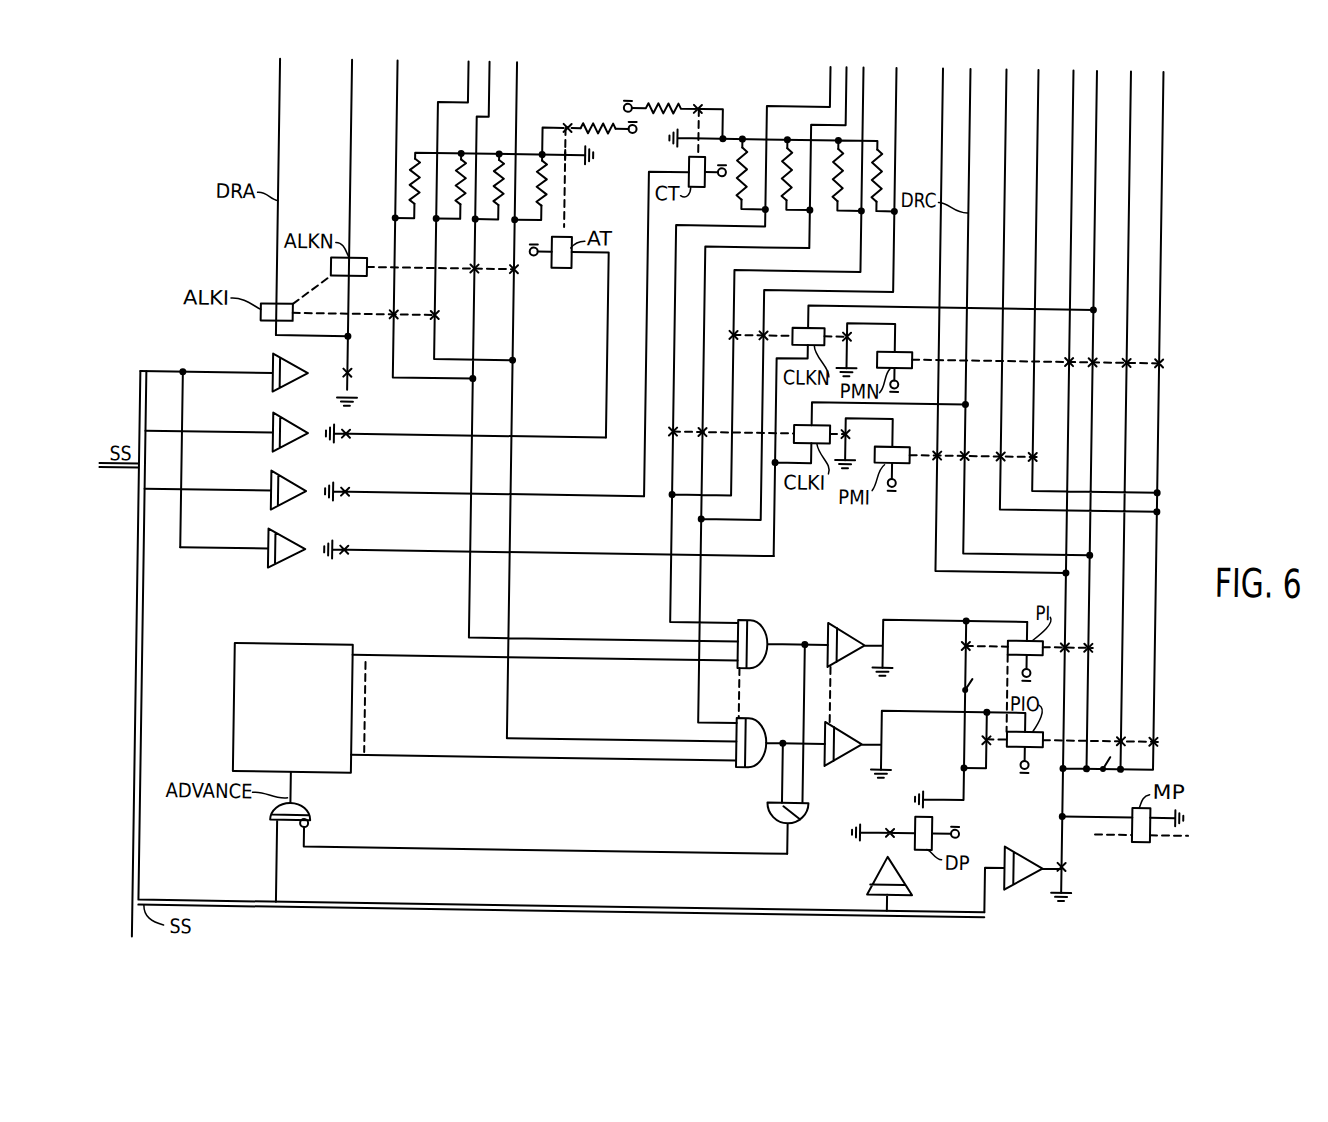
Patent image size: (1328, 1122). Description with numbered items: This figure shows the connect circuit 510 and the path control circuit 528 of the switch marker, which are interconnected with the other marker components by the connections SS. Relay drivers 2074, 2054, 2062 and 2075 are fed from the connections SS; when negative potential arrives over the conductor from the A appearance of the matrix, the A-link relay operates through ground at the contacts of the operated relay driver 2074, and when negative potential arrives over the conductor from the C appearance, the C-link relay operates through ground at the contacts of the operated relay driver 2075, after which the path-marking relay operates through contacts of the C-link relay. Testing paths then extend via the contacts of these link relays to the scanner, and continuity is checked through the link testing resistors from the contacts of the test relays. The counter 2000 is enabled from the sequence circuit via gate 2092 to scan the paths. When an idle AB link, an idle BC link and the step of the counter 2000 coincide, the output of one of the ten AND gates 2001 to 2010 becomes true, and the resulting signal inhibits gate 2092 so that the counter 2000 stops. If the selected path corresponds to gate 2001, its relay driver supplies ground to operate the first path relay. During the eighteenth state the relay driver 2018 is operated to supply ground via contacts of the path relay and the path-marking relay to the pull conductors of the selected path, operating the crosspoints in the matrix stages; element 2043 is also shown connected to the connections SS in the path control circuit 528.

The connect circuit 510 is at (1250, 312).
The path control circuit 528 is at (1256, 680).
The counter 2000 is at (270, 734).
The AND gate 2001 is at (760, 600).
The AND gate 2010 is at (756, 768).
The relay driver 2018 is at (1045, 826).
The gate element 2043 is at (878, 876).
The relay driver 2054 is at (272, 439).
The relay driver 2062 is at (271, 497).
The relay driver 2074 is at (271, 379).
The relay driver 2075 is at (269, 555).
The gate 2092 is at (312, 822).